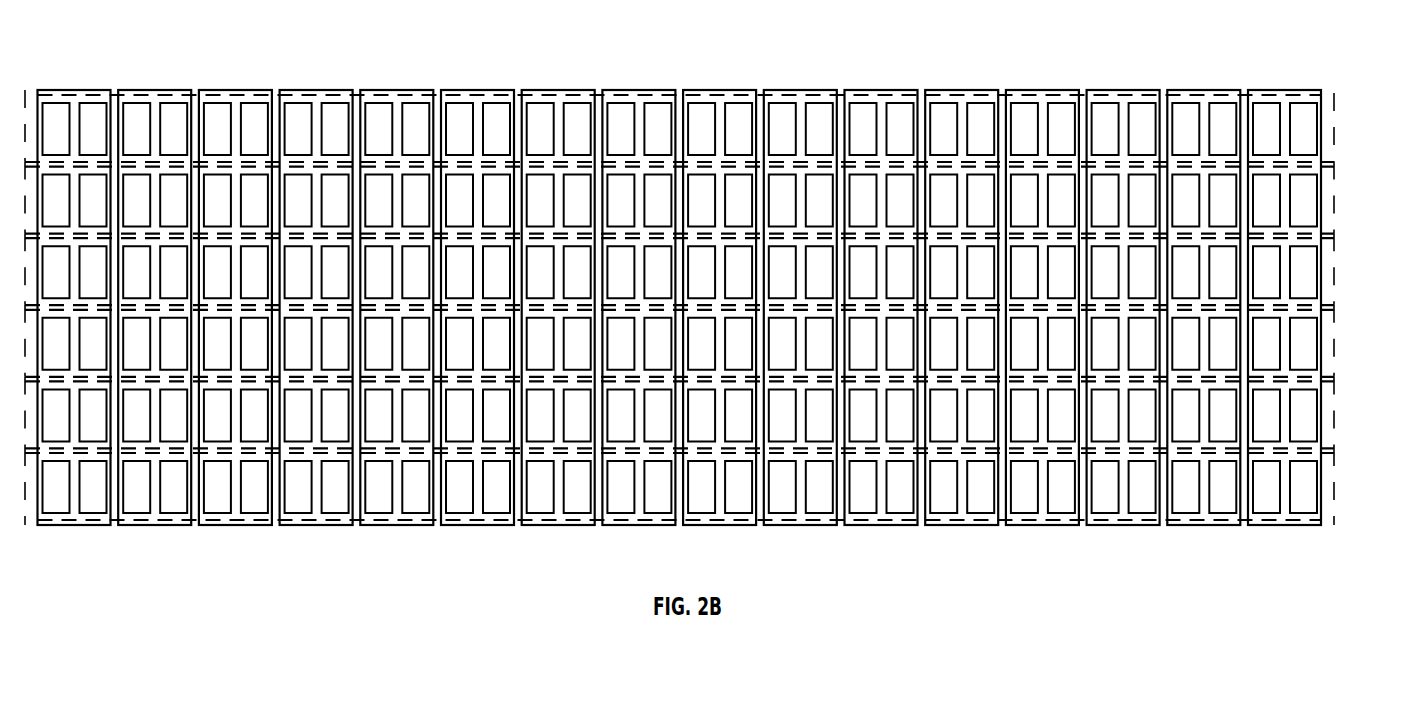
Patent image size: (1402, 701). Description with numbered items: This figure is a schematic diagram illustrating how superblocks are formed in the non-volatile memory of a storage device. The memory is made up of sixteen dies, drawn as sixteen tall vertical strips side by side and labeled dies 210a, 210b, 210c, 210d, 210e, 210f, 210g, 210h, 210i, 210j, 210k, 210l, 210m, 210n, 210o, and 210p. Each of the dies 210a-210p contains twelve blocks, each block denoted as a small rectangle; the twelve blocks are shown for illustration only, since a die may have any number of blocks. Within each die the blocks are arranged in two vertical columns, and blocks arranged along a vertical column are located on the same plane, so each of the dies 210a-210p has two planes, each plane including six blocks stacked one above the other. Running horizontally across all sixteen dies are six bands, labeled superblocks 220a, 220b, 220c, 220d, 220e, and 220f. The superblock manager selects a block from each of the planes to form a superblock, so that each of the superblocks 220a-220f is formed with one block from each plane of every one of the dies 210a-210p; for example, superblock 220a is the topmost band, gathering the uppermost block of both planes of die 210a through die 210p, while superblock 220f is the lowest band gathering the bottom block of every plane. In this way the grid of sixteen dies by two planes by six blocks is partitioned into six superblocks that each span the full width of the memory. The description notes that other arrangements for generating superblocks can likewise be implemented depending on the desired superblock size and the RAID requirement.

The die 210a is at (25, 90).
The die 210b is at (163, 278).
The die 210c is at (244, 278).
The die 210d is at (325, 278).
The die 210e is at (405, 278).
The die 210f is at (486, 278).
The die 210g is at (567, 278).
The die 210h is at (647, 278).
The die 210i is at (728, 278).
The die 210j is at (809, 278).
The die 210k is at (890, 278).
The die 210l is at (970, 278).
The die 210m is at (1051, 278).
The die 210n is at (1132, 278).
The die 210o is at (1212, 278).
The die 210p is at (1293, 278).
The superblock 220a is at (1334, 104).
The superblock 220b is at (1334, 178).
The superblock 220c is at (1334, 251).
The superblock 220d is at (1334, 324).
The superblock 220e is at (1334, 398).
The superblock 220f is at (1334, 472).